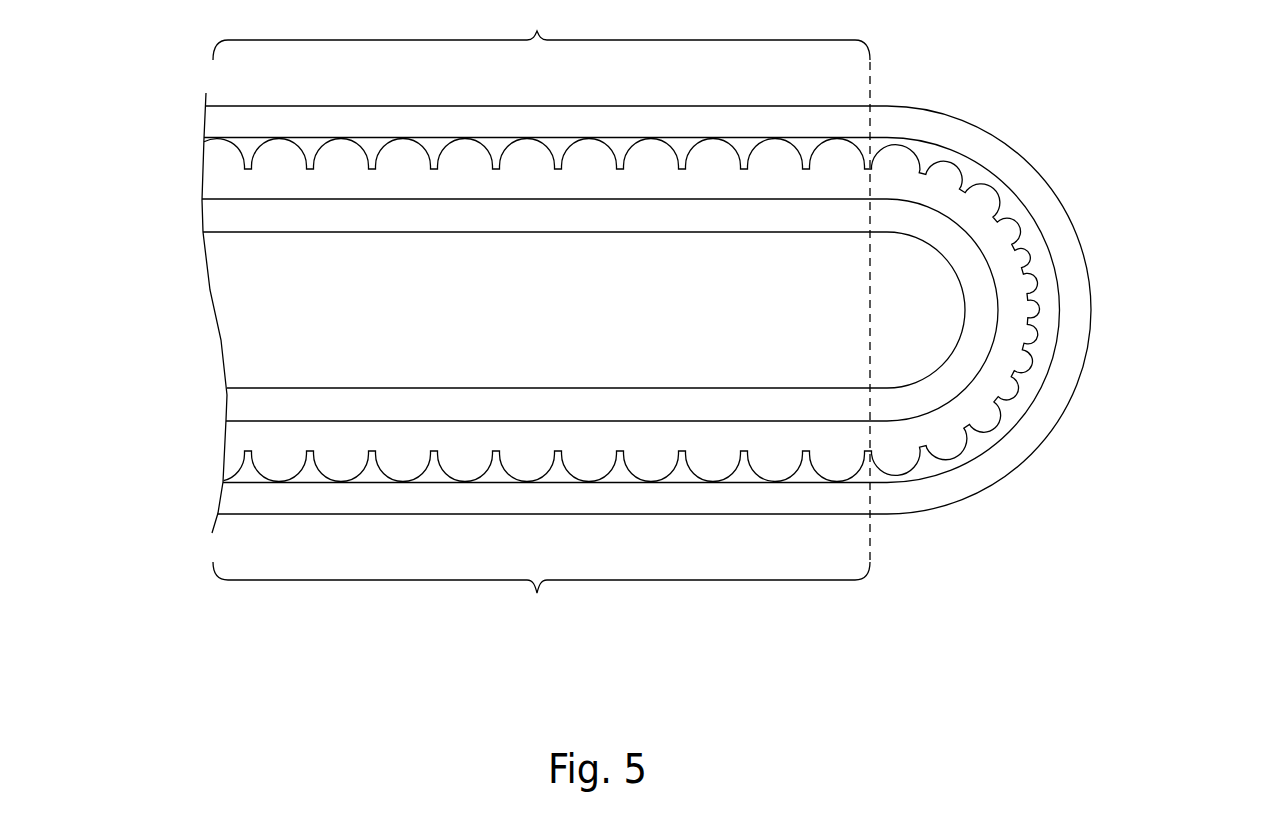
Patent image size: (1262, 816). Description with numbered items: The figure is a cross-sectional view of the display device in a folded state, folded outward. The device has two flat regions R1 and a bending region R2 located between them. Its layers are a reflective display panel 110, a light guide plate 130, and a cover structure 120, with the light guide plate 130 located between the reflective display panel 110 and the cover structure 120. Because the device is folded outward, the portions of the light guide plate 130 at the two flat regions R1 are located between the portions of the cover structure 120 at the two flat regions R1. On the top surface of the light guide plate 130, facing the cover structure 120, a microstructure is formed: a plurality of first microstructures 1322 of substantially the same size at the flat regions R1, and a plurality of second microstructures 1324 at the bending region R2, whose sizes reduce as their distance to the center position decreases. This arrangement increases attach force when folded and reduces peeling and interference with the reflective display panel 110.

The reflective display panel 110 is at (212, 215).
The cover structure 120 is at (212, 122).
The light guide plate 130 is at (212, 173).
The first microstructures 1322 is at (463, 165).
The second microstructures 1324 is at (1032, 310).
The flat regions R1 is at (541, 313).
The bending region R2 is at (1112, 264).